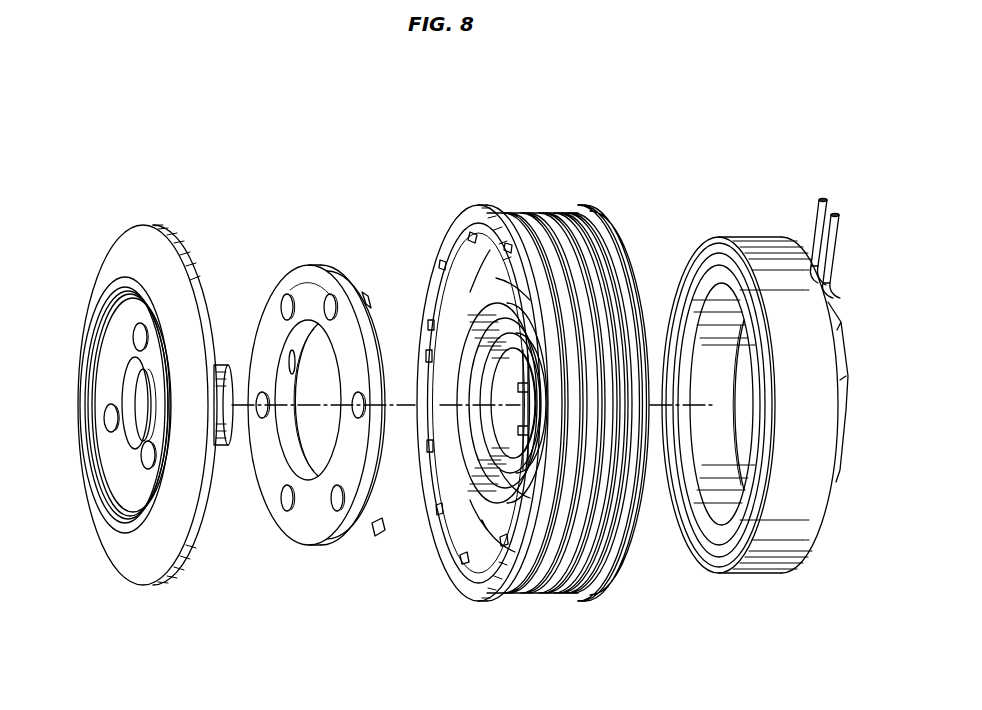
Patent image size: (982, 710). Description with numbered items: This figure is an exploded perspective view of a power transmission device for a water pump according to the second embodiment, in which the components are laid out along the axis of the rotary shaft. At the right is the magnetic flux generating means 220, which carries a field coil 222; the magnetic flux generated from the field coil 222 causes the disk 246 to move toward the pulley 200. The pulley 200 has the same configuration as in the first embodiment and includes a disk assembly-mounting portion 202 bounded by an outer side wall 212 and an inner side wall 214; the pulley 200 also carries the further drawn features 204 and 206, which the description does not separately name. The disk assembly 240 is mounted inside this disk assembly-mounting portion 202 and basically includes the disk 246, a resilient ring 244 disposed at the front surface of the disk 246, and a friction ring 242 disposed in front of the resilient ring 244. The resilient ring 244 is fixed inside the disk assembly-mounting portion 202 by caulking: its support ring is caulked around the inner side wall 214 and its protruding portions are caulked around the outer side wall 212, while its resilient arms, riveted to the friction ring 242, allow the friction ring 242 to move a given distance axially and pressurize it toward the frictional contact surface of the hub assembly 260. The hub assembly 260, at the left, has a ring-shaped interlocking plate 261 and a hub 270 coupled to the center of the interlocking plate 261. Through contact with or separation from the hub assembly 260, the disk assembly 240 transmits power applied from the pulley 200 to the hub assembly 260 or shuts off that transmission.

The pulley 200 is at (478, 192).
The disk assembly-mounting portion 202 is at (473, 547).
The pulley friction surface 204 is at (475, 293).
The bearing ring 206 is at (497, 542).
The outer side wall 212 is at (430, 530).
The inner side wall 214 is at (521, 483).
The magnetic flux generating means 220 is at (686, 225).
The field coil 222 is at (714, 547).
The disk assembly 240 is at (265, 274).
The friction ring 242 is at (382, 518).
The resilient ring 244 is at (365, 305).
The disk 246 is at (312, 277).
The hub assembly 260 is at (118, 215).
The interlocking plate 261 is at (193, 258).
The hub 270 is at (140, 407).